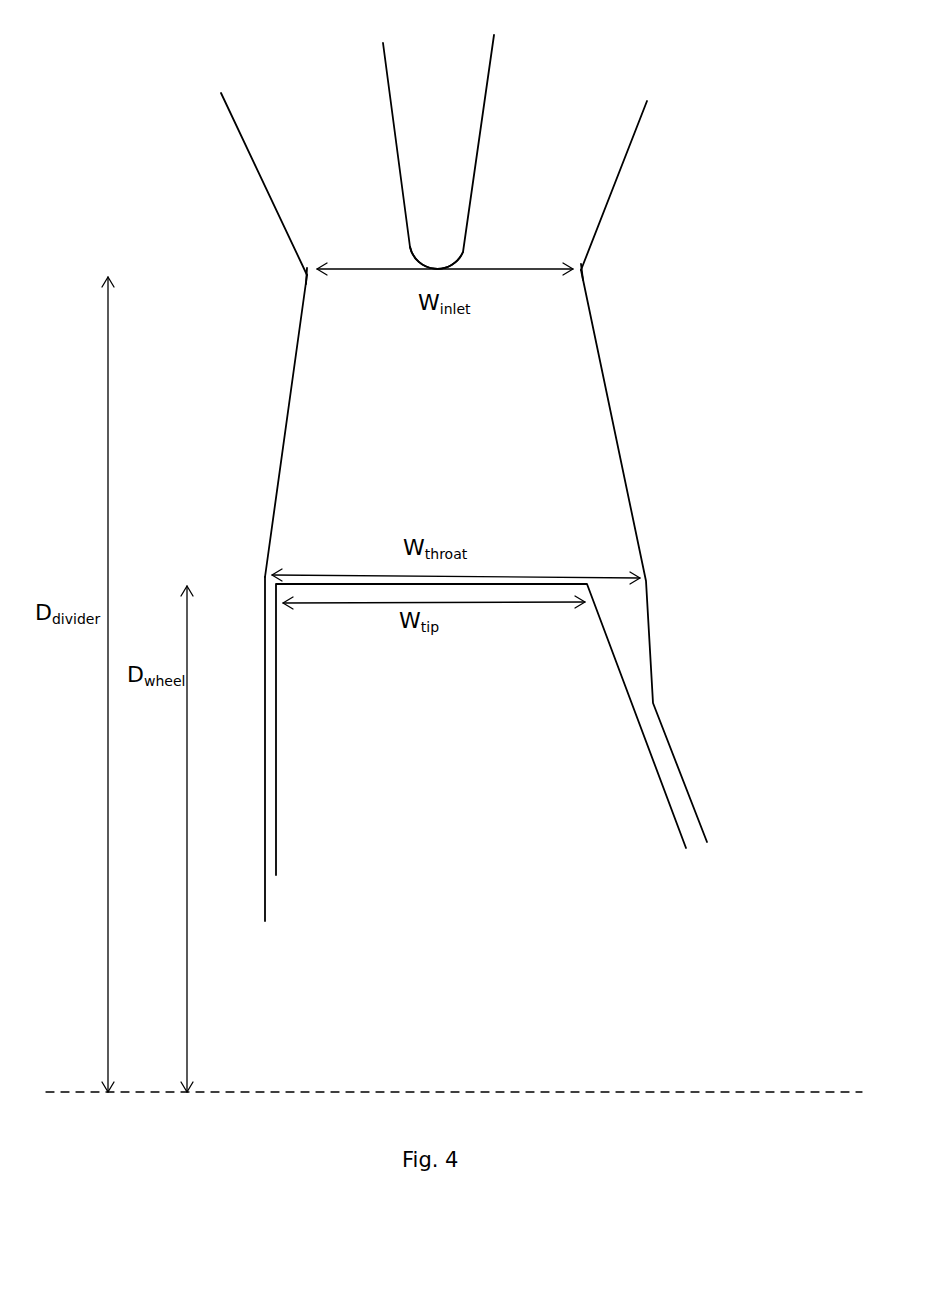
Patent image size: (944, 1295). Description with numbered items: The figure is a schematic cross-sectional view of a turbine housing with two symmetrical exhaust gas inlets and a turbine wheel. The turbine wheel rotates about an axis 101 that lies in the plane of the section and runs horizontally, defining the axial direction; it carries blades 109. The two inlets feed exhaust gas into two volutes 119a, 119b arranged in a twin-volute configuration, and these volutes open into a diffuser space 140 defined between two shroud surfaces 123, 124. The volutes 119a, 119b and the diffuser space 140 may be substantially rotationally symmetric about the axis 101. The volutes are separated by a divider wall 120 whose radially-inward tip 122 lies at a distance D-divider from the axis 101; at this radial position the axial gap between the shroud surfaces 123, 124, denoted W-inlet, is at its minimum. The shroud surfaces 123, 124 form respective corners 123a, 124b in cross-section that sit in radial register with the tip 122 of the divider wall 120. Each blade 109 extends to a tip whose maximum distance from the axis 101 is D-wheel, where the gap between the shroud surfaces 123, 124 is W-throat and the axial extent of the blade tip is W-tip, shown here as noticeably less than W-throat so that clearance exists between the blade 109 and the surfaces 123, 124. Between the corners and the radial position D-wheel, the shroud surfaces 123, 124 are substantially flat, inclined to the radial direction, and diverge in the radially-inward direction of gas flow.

The axis 101 is at (512, 1092).
The blades 109 is at (617, 756).
The volute 119a is at (587, 140).
The volute 119b is at (307, 110).
The divider wall 120 is at (412, 110).
The radially-inward tip 122 is at (437, 268).
The shroud surface 123 is at (595, 328).
The corner 123a is at (582, 272).
The shroud surface 124 is at (302, 337).
The corner 124b is at (307, 277).
The diffuser space 140 is at (487, 360).